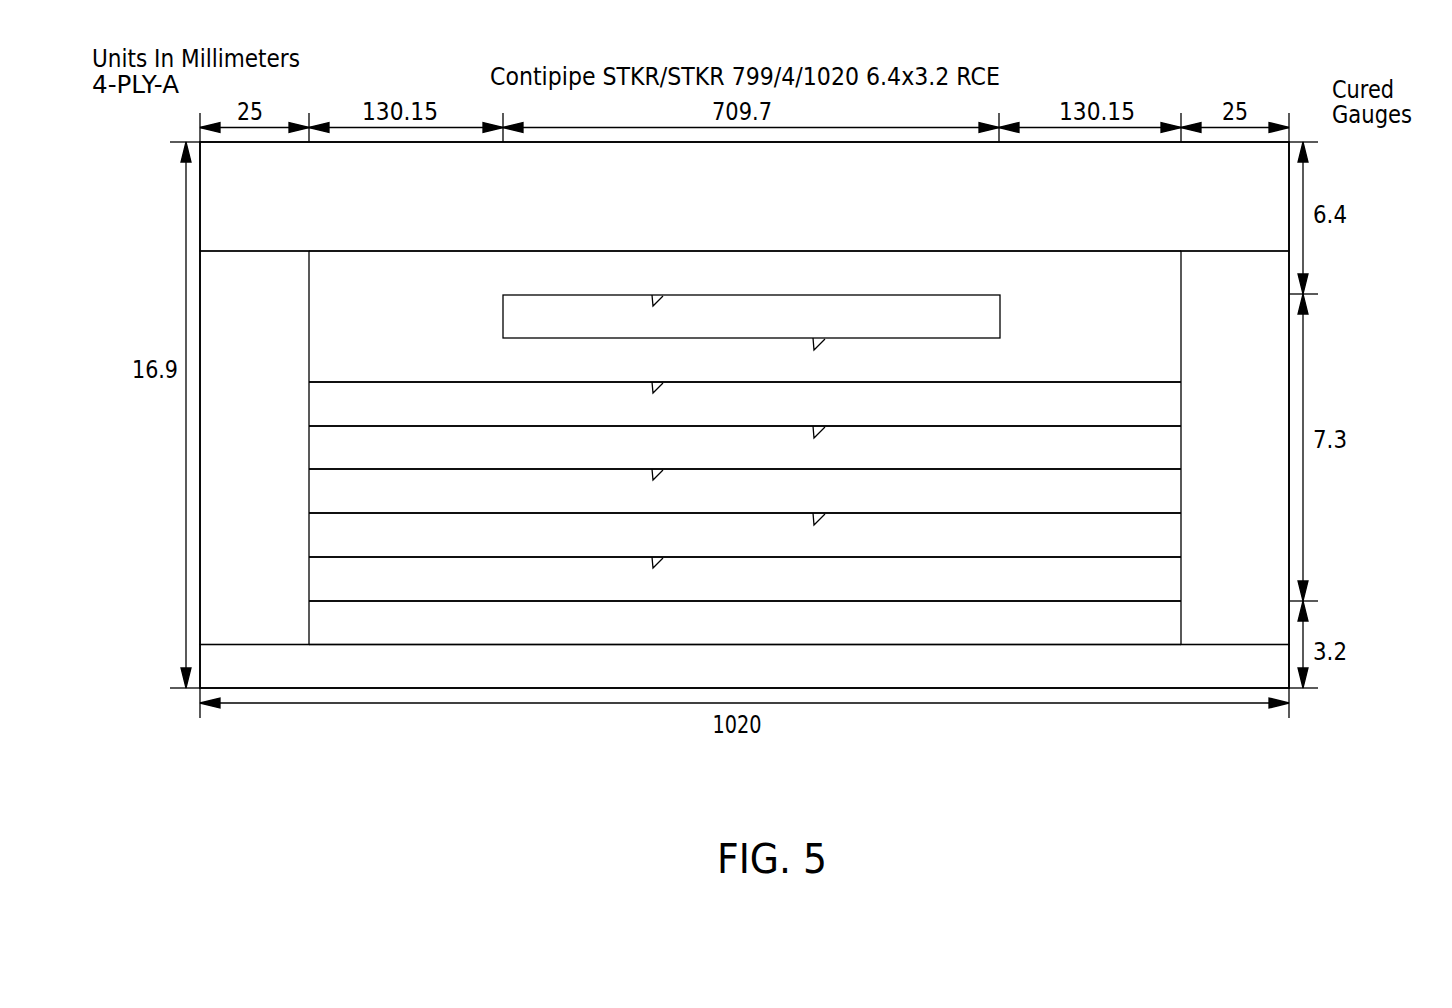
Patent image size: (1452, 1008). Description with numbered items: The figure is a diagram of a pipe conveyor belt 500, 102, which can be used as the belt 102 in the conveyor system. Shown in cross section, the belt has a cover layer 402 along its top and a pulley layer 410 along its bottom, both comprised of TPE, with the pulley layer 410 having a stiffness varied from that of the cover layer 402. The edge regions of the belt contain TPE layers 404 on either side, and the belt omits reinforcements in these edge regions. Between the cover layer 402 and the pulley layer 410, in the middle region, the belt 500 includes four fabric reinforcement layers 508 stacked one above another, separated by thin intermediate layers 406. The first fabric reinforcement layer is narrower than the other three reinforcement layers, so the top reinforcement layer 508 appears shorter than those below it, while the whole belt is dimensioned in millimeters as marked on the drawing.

The pipe conveyor belt 500 is at (255, 782).
The belt 102 is at (734, 478).
The cover layer 402 is at (717, 233).
The TPE layers 404 is at (275, 294).
The adhesive/skim layers 406 is at (615, 283).
The fabric reinforcement layers 508 is at (615, 328).
The pulley layer 410 is at (773, 678).